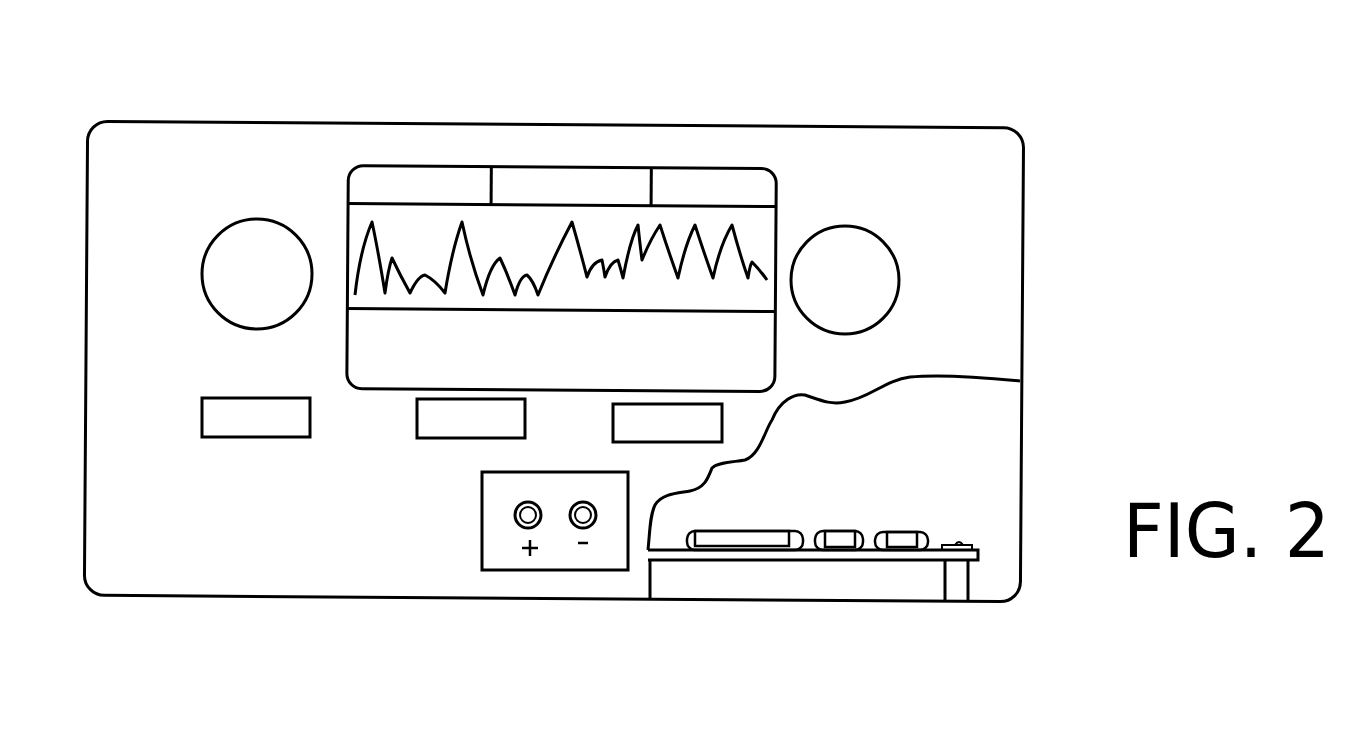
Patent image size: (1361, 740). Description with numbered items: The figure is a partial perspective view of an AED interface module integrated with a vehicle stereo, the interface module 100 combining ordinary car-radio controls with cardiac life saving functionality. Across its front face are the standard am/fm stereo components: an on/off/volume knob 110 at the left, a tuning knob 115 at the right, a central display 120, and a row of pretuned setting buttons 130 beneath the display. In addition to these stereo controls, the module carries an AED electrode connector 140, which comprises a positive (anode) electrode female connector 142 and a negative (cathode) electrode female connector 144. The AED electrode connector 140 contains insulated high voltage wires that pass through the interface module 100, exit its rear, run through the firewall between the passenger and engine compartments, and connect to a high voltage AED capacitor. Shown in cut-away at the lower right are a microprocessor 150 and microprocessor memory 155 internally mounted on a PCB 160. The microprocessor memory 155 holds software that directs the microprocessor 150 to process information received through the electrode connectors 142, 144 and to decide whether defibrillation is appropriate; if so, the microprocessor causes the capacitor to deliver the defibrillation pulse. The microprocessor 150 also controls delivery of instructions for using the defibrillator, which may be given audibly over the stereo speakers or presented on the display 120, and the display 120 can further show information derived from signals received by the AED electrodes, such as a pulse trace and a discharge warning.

The interface module 100 is at (704, 122).
The on/off/volume knob 110 is at (253, 222).
The tuning knob 115 is at (862, 229).
The display 120 is at (362, 168).
The pretuned setting buttons 130 is at (202, 417).
The AED electrode connector 140 is at (482, 498).
The positive electrode female connector 142 is at (530, 500).
The negative electrode female connector 144 is at (583, 500).
The microprocessor 150 is at (740, 530).
The microprocessor memory 155 is at (840, 530).
The PCB 160 is at (812, 560).